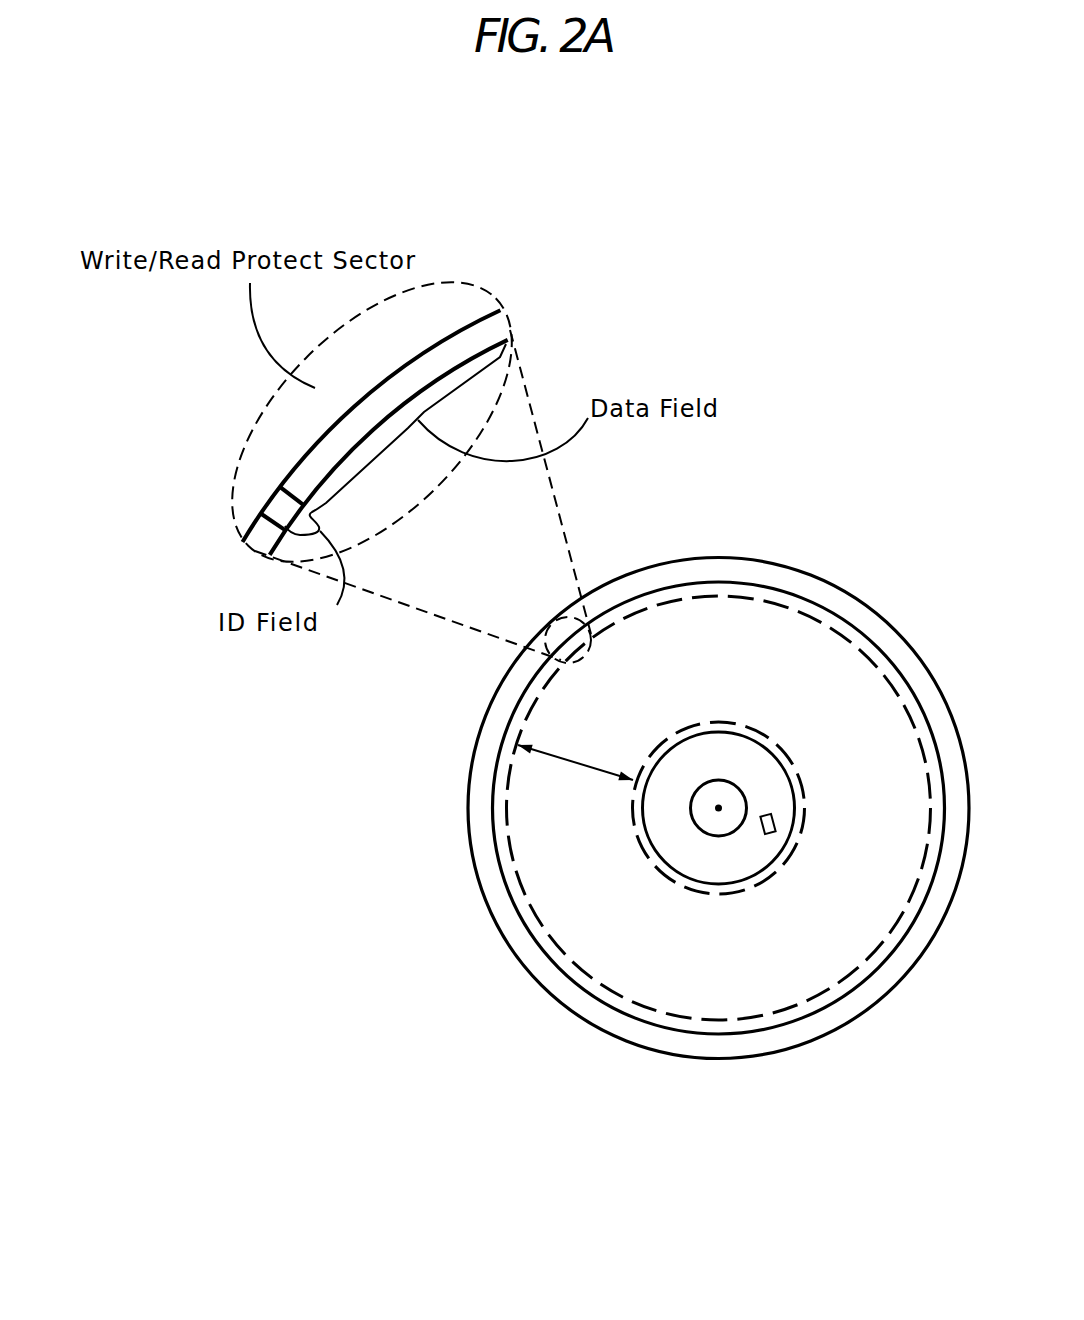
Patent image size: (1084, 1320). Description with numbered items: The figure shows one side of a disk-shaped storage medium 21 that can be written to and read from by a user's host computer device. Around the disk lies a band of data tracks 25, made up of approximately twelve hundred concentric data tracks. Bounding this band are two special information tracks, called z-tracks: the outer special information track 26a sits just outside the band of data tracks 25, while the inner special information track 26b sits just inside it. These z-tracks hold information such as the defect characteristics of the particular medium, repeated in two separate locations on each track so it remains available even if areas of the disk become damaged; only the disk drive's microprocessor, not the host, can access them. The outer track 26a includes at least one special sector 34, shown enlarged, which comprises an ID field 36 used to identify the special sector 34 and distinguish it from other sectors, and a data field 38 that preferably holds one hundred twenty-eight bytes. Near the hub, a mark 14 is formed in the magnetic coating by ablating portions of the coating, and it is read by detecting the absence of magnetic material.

The storage medium 21 is at (773, 1098).
The mark 14 is at (775, 831).
The band of data tracks 25 is at (578, 755).
The outer special information track 26a is at (497, 875).
The inner special information track 26b is at (667, 878).
The special sector 34 is at (438, 340).
The ID field 36 is at (283, 511).
The data field 38 is at (487, 332).